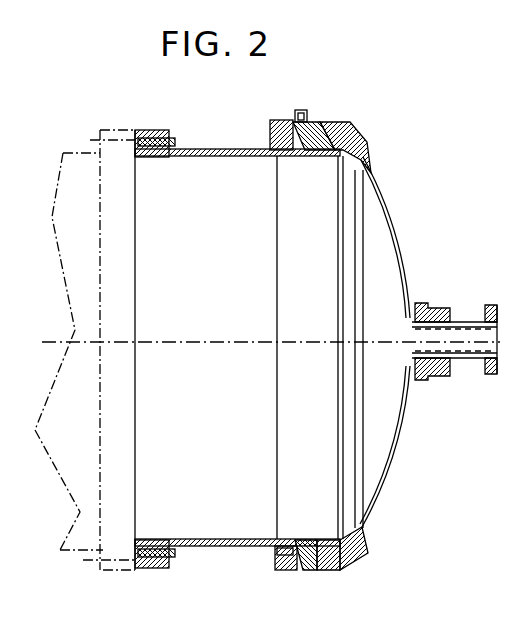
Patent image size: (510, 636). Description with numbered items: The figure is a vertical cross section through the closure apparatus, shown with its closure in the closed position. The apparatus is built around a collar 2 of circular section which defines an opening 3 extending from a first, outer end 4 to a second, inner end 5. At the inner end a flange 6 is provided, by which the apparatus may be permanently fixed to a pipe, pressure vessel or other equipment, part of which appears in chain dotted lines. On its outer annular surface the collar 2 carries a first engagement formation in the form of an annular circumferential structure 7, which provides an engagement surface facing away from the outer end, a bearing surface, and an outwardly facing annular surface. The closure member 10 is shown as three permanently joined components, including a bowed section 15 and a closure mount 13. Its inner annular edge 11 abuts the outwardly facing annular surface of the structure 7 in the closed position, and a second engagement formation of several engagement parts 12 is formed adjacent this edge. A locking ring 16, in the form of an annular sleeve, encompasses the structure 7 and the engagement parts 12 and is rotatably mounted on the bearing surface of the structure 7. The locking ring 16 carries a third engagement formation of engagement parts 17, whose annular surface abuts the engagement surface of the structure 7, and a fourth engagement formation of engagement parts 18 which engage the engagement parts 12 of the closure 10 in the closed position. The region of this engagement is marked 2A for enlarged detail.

The collar 2 is at (208, 149).
The detail area (FIG. 2A) 2A is at (305, 97).
The opening 3 is at (225, 468).
The first, outer end 4 is at (342, 477).
The second, inner end 5 is at (135, 418).
The flange 6 is at (155, 132).
The annular circumferential structure 7 is at (50, 238).
The closure member 10 is at (402, 433).
The inner annular edge 11 is at (317, 539).
The engagement parts 12 is at (336, 556).
The closure mount 13 is at (472, 357).
The bowed section 15 is at (406, 265).
The locking ring 16 is at (279, 573).
The engagement parts 17 is at (275, 553).
The engagement parts 18 is at (322, 570).